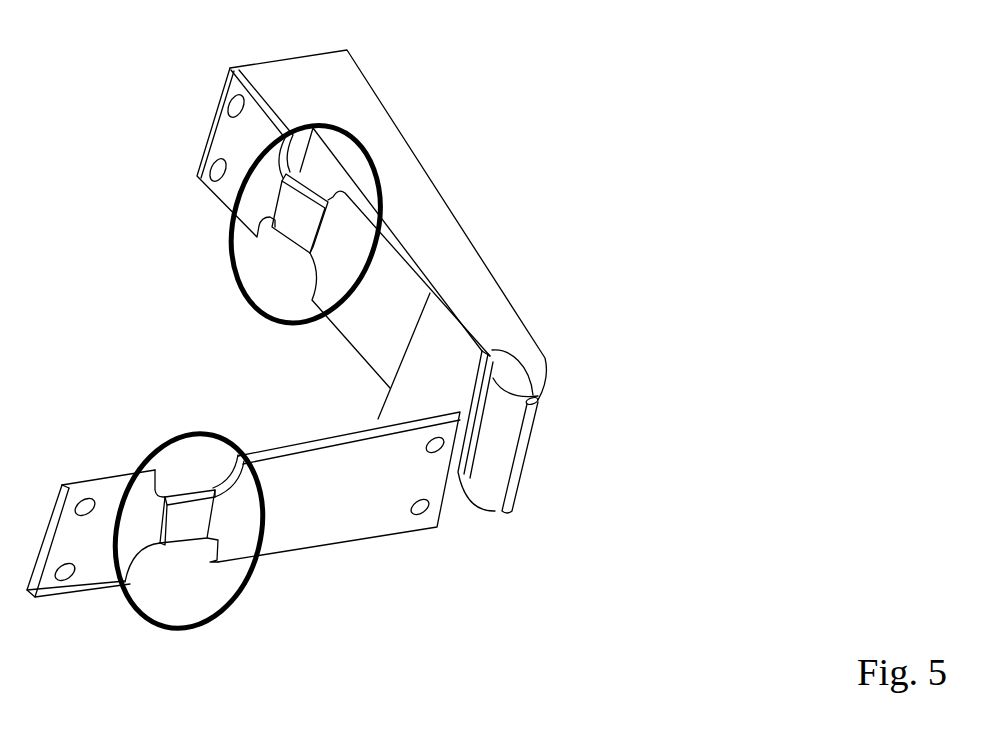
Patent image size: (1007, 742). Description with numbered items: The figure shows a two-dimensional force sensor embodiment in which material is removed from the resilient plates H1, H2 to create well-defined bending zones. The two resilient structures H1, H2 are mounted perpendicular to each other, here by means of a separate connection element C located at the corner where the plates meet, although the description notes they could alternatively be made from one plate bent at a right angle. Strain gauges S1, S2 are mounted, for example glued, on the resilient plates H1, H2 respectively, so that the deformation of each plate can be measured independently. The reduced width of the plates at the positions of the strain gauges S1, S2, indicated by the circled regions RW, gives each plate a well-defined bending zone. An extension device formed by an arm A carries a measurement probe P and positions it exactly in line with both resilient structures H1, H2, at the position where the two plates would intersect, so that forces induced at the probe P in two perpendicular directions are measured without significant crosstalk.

The arm A is at (371, 225).
The strain gauge S2 is at (331, 281).
The resilient structure H2 is at (428, 356).
The connection element C is at (491, 430).
The measurement probe P is at (520, 455).
The resilient structure H1 is at (243, 504).
The strain gauge S1 is at (184, 518).
The reinforcing walls (circled regions) RW is at (217, 432).